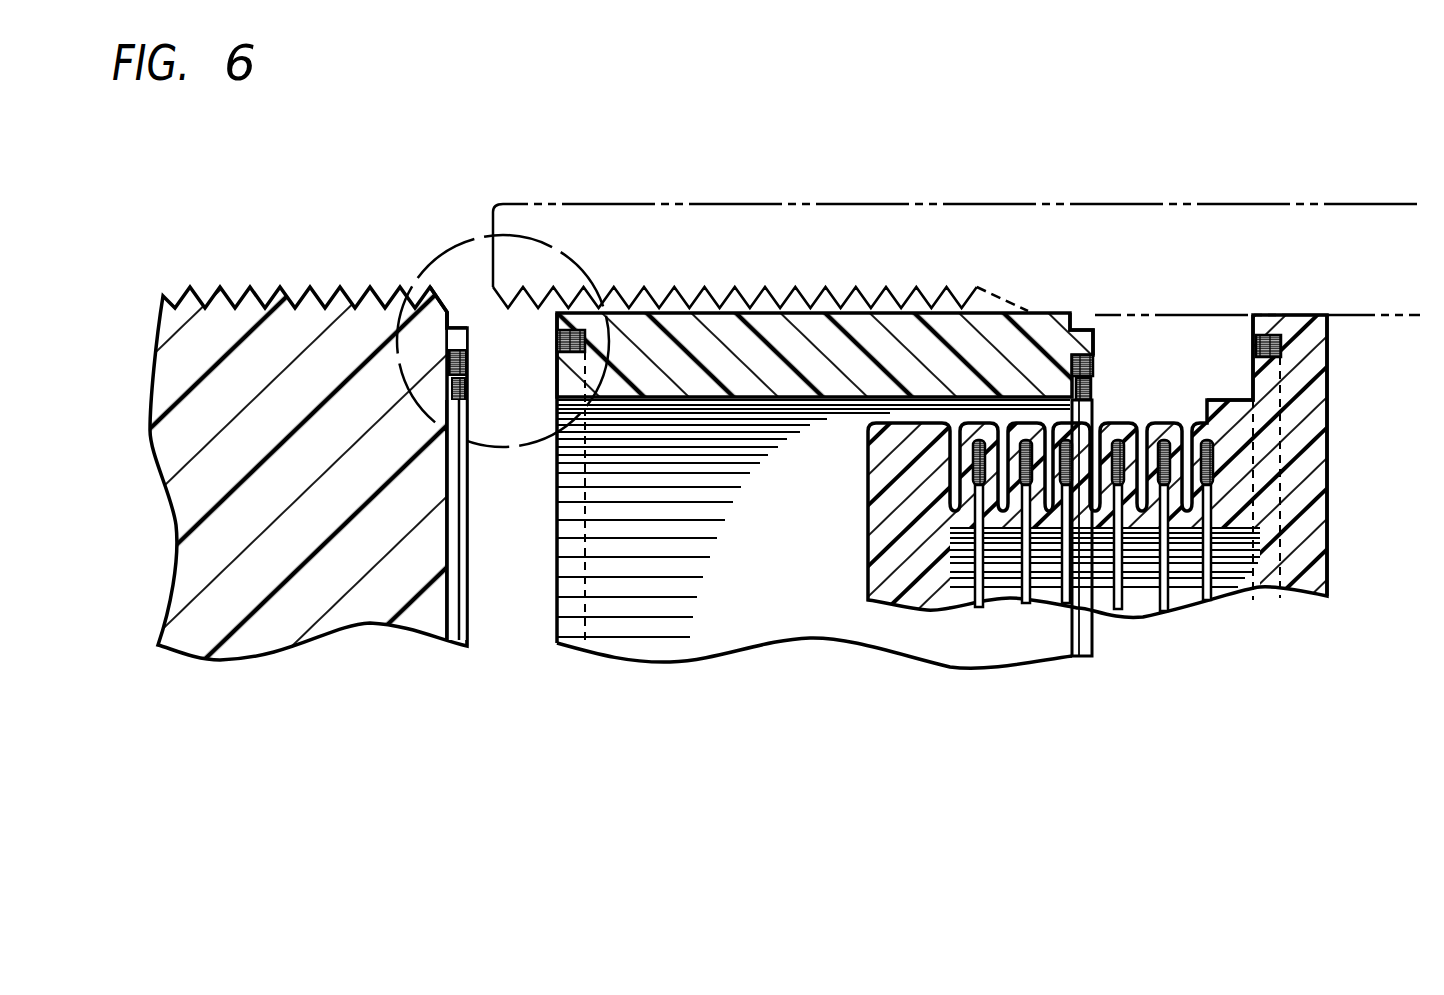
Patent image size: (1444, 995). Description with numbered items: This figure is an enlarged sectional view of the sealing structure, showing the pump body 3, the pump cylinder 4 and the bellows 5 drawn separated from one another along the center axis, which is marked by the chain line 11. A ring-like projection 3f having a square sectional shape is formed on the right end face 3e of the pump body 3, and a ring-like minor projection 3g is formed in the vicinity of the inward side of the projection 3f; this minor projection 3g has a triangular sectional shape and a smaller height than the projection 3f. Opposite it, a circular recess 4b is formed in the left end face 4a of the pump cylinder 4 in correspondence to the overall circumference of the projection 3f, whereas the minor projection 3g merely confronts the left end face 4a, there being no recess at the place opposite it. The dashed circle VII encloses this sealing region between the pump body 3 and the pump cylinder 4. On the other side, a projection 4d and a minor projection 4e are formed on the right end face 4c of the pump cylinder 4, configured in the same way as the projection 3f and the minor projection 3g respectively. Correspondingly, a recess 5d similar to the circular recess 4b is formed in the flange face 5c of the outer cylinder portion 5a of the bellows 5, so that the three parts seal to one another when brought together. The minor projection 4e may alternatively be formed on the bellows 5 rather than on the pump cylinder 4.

The pump body 3 is at (322, 475).
The right end face 3e is at (445, 313).
The projection 3f is at (468, 333).
The minor projection 3g is at (470, 377).
The pump cylinder 4 is at (839, 443).
The left end face 4a is at (557, 377).
The circular recess 4b is at (557, 340).
The right end face 4c is at (1088, 316).
The projection 4d is at (1096, 333).
The minor projection 4e is at (1117, 362).
The bellows 5 is at (1148, 453).
The outer cylinder portion 5a is at (1300, 458).
The flange face 5c is at (1260, 327).
The recess 5d is at (1253, 336).
The center axis line 11 is at (668, 203).
The detail view indicator VII is at (420, 279).